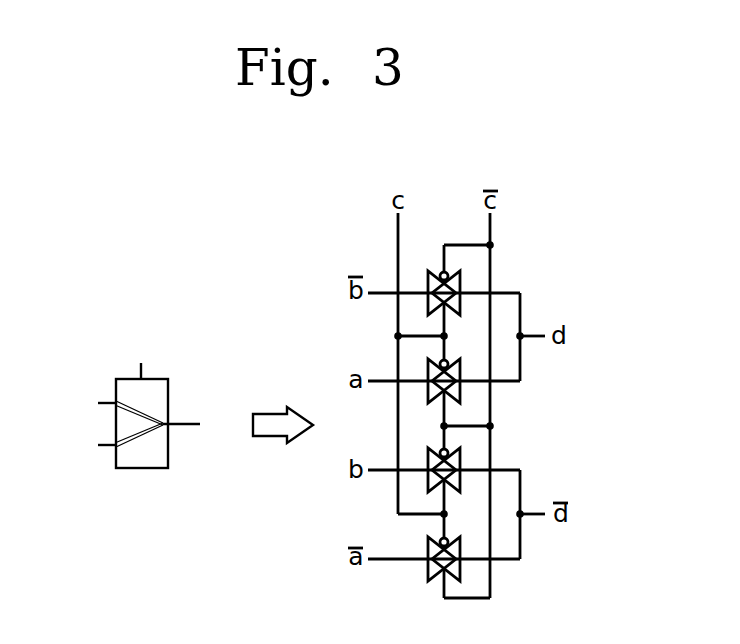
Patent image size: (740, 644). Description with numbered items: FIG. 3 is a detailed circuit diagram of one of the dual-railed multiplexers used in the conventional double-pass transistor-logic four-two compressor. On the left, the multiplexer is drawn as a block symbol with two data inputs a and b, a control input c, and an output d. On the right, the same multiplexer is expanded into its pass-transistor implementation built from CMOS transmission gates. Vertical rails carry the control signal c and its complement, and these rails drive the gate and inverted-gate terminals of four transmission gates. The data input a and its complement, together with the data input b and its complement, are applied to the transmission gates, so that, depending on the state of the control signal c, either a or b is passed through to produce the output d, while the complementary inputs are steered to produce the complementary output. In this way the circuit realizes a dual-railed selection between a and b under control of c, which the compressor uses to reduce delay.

The multiplexer data input a is at (98, 403).
The multiplexer data input b is at (98, 444).
The multiplexer control input c is at (141, 356).
The multiplexer output d is at (190, 423).